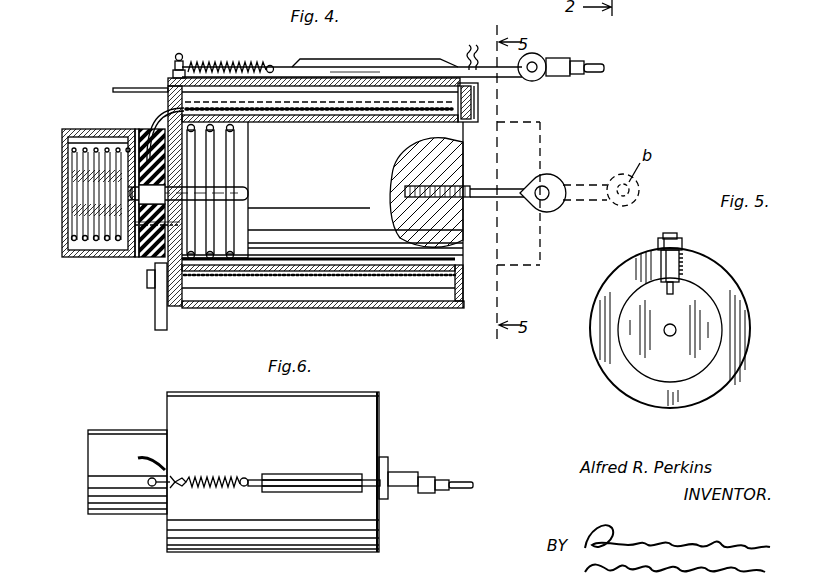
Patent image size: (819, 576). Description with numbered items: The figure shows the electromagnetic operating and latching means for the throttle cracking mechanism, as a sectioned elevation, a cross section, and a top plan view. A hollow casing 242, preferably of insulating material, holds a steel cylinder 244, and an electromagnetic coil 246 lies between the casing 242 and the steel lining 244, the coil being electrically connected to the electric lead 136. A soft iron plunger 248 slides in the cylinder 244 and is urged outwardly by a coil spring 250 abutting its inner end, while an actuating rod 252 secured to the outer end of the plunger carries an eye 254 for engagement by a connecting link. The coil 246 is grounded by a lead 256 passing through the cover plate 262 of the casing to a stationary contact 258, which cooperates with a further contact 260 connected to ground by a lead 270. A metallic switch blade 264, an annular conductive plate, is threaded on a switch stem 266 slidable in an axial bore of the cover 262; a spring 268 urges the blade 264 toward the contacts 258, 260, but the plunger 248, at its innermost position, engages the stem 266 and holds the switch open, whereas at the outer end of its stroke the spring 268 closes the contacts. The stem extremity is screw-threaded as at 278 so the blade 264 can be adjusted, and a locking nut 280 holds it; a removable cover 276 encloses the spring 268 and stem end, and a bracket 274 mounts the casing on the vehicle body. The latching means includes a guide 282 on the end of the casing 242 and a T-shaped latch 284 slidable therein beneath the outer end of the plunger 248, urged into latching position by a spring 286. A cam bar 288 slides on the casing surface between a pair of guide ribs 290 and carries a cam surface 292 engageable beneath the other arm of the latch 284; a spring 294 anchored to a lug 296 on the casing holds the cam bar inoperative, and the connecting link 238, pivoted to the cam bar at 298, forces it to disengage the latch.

In FIG. 4, the electric lead 136 is at (135, 88).
In FIG. 6, the electric lead 136 is at (146, 456).
In FIG. 4, the connecting link 238 is at (600, 76).
In FIG. 6, the connecting link 238 is at (461, 490).
In FIG. 4, the hollow casing 242 is at (228, 308).
In FIG. 5, the hollow casing 242 is at (737, 282).
In FIG. 4, the steel cylinder 244 is at (273, 123).
In FIG. 4, the electromagnetic coil 246 is at (341, 95).
In FIG. 4, the plunger 248 is at (432, 148).
In FIG. 5, the plunger 248 is at (707, 325).
In FIG. 4, the coil spring 250 is at (276, 190).
In FIG. 4, the actuating rod 252 is at (519, 186).
In FIG. 5, the actuating rod 252 is at (670, 338).
In FIG. 6, the actuating rod 252 is at (408, 474).
In FIG. 4, the eye 254 is at (556, 210).
In FIG. 4, the lead 256 is at (172, 120).
In FIG. 6, the lead 256 is at (158, 488).
In FIG. 4, the stationary contact 258 is at (108, 140).
In FIG. 4, the contact 260 is at (140, 242).
In FIG. 4, the cover plate 262 is at (150, 135).
In FIG. 4, the switch blade 264 is at (128, 228).
In FIG. 4, the switch stem 266 is at (250, 188).
In FIG. 4, the spring 268 is at (70, 156).
In FIG. 4, the lead 270 is at (148, 272).
In FIG. 4, the bracket 274 is at (156, 318).
In FIG. 4, the removable cover 276 is at (66, 205).
In FIG. 6, the removable cover 276 is at (114, 498).
In FIG. 4, the screw-threaded extremity 278 is at (70, 193).
In FIG. 4, the locking nut 280 is at (75, 233).
In FIG. 4, the guide 282 is at (493, 104).
In FIG. 5, the guide 282 is at (664, 268).
In FIG. 4, the T-shaped latch 284 is at (474, 45).
In FIG. 5, the T-shaped latch 284 is at (680, 245).
In FIG. 6, the T-shaped latch 284 is at (390, 470).
In FIG. 5, the spring 286 is at (692, 262).
In FIG. 4, the cam bar 288 is at (310, 72).
In FIG. 5, the cam bar 288 is at (664, 248).
In FIG. 6, the cam bar 288 is at (266, 478).
In FIG. 6, the ribs 290 is at (300, 476).
In FIG. 4, the cam surface 292 is at (412, 60).
In FIG. 6, the cam surface 292 is at (340, 476).
In FIG. 4, the spring 294 is at (216, 63).
In FIG. 6, the spring 294 is at (218, 488).
In FIG. 4, the lug 296 is at (180, 53).
In FIG. 6, the lug 296 is at (178, 486).
In FIG. 4, the pivot 298 is at (542, 60).